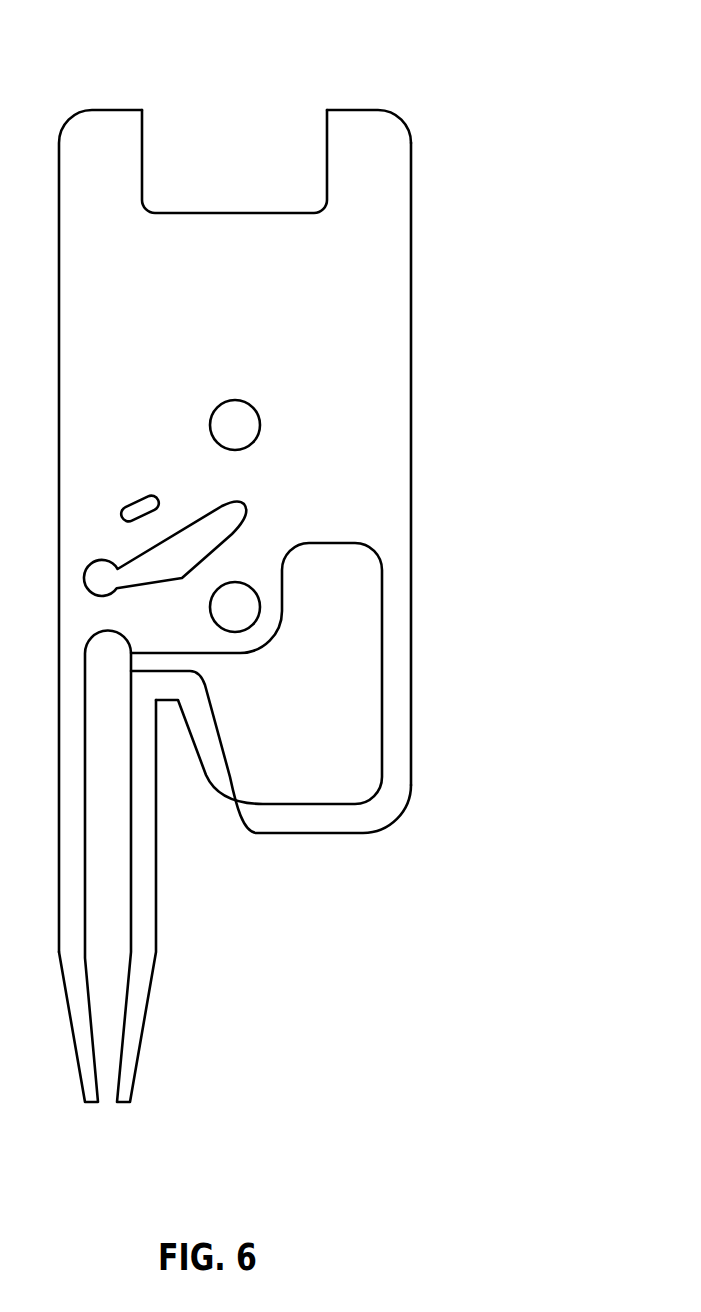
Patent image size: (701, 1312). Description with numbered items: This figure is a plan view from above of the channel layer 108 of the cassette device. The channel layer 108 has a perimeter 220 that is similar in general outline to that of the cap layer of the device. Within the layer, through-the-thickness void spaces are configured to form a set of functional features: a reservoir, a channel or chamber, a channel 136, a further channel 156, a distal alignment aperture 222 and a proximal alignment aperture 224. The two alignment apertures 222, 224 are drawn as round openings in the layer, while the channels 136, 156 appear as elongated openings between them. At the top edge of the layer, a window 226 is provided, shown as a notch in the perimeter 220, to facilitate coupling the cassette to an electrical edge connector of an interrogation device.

The channel layer 108 is at (402, 447).
The perimeter 220 is at (420, 514).
The window 226 is at (243, 168).
The proximal alignment aperture 224 is at (233, 419).
The distal alignment aperture 222 is at (225, 612).
The channel 156 is at (139, 507).
The channel 136 is at (208, 527).